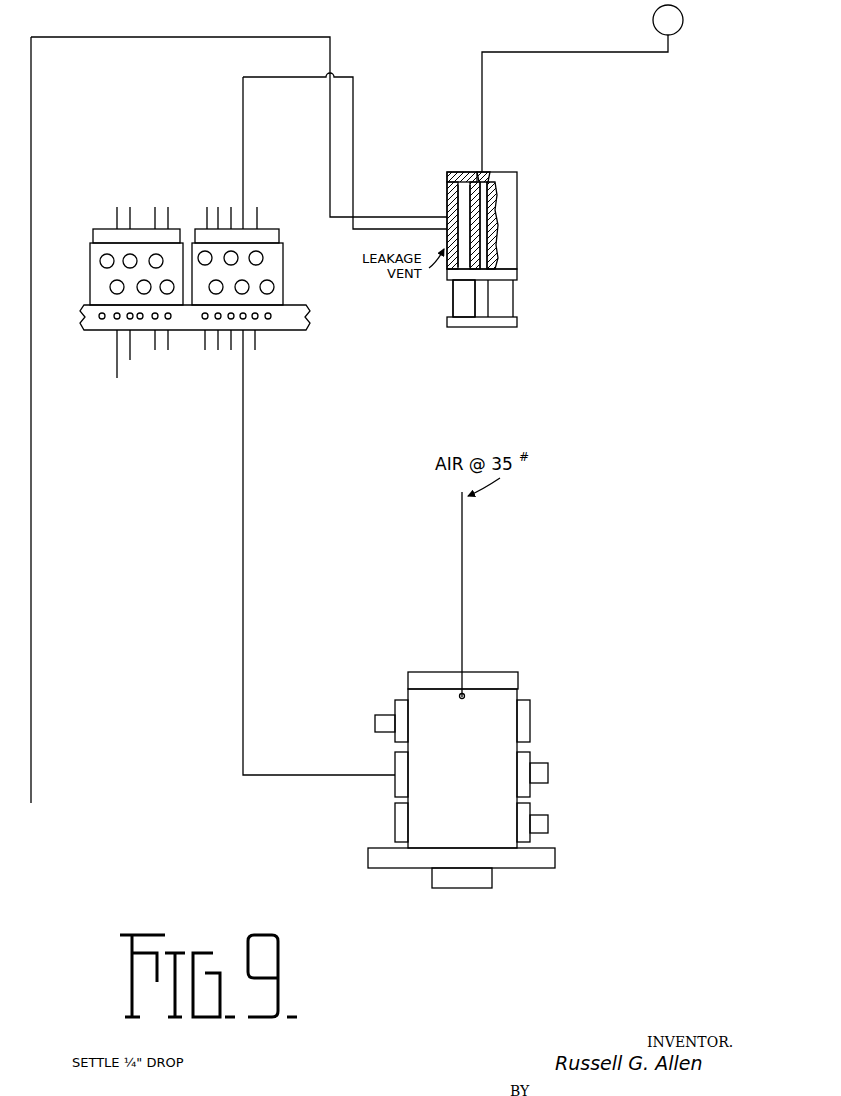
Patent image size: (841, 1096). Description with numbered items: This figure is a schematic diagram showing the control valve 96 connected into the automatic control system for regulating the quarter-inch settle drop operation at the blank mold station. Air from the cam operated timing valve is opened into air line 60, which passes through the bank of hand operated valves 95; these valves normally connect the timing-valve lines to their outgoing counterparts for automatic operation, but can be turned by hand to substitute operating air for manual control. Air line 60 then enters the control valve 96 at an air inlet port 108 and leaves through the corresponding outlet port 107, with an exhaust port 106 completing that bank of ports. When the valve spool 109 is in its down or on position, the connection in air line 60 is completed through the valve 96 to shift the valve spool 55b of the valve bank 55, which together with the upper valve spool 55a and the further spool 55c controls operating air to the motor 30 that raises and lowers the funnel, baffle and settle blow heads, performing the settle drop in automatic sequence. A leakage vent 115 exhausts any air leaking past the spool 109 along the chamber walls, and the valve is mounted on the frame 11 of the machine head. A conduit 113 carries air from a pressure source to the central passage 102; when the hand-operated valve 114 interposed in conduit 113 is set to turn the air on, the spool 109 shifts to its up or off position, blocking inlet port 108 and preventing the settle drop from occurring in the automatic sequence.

The frame 11 is at (296, 318).
The motor 30 is at (497, 683).
The valve bank 55 is at (462, 770).
The valve spool 55a is at (394, 697).
The valve spool 55b is at (541, 769).
The cylinder port 55c is at (553, 819).
The air line 60 is at (247, 161).
The bank of hand operated valves 95 is at (88, 284).
The control valve 96 is at (522, 189).
The central passage 102 is at (483, 257).
The exhaust port 106 is at (461, 172).
The outlet port 107 is at (445, 200).
The inlet port 108 is at (453, 232).
The valve spool 109 is at (463, 259).
The conduit 113 is at (484, 127).
The hand-operated valve 114 is at (652, 23).
The leakage vent 115 is at (451, 253).